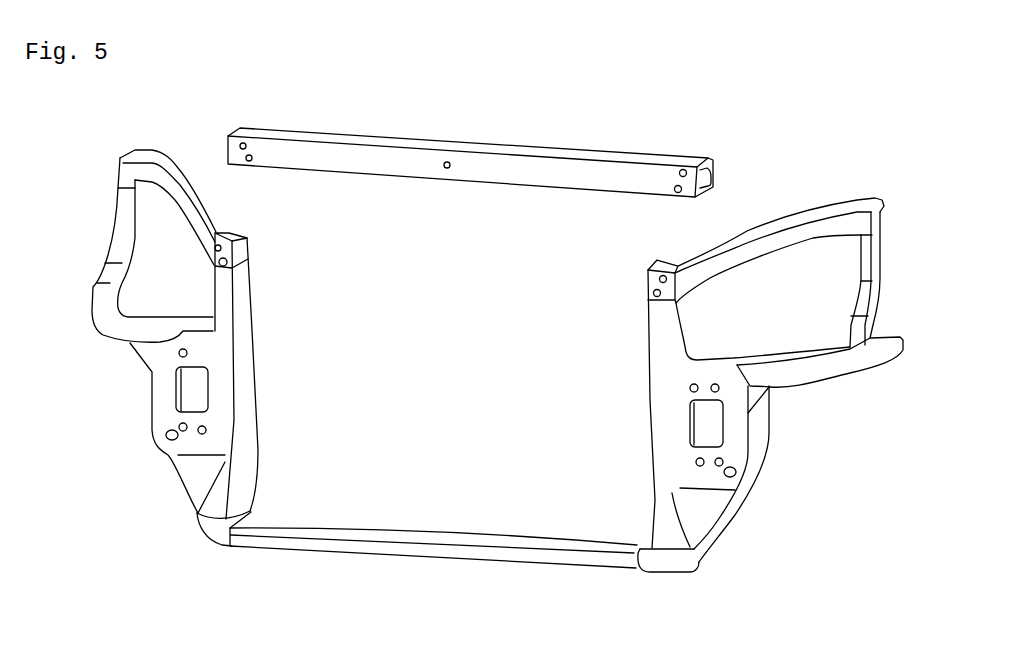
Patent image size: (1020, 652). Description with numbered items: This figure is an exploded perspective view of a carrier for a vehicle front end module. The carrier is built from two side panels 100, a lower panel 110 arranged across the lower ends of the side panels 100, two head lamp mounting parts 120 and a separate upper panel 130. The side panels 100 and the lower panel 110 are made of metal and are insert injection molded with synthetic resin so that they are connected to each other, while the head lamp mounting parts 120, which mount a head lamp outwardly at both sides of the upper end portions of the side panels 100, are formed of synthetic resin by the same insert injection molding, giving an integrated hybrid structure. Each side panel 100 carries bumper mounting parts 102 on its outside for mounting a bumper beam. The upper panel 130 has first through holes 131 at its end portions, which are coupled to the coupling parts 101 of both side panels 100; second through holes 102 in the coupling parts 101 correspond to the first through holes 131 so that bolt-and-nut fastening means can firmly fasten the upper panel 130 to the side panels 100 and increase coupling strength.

The side panel 100 is at (246, 337).
The coupling part 101 is at (477, 361).
The bumper mounting part 102 is at (217, 231).
The lower panel 110 is at (418, 534).
The head lamp mounting part 120 is at (102, 334).
The upper panel 130 is at (470, 162).
The first through hole 131 is at (244, 144).